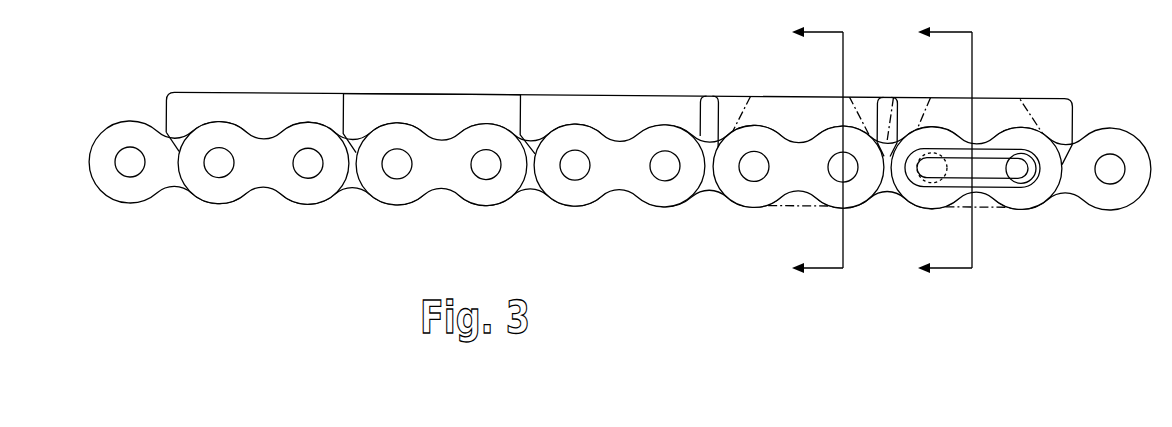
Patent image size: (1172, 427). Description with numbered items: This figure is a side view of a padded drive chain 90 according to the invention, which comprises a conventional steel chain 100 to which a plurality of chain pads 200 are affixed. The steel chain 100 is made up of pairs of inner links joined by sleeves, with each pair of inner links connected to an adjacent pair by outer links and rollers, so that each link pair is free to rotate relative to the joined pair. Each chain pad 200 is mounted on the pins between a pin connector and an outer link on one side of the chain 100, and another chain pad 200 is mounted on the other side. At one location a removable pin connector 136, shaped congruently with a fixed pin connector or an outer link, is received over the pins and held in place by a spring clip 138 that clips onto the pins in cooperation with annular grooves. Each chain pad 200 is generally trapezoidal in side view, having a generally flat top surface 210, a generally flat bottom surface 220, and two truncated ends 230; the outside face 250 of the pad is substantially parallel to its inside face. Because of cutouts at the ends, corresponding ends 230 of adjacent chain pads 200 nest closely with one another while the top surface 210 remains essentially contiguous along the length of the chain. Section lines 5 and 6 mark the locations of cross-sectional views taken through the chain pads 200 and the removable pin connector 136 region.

The section line 5- 5 is at (817, 152).
The section line 6- 6 is at (945, 153).
The padded drive chain 90 is at (1065, 63).
The steel chain 100 is at (115, 185).
The removable pin connector 136 is at (1022, 208).
The spring clip 138 is at (1040, 193).
The chain pad 200 is at (268, 103).
The top surface 210 is at (800, 97).
The bottom surface 220 is at (790, 203).
The truncated end 230 is at (163, 105).
The outside face 250 is at (463, 126).